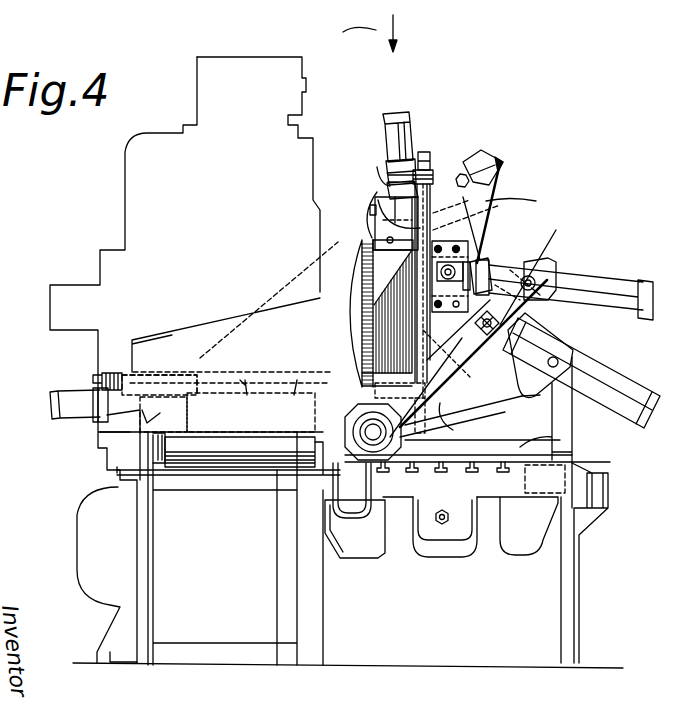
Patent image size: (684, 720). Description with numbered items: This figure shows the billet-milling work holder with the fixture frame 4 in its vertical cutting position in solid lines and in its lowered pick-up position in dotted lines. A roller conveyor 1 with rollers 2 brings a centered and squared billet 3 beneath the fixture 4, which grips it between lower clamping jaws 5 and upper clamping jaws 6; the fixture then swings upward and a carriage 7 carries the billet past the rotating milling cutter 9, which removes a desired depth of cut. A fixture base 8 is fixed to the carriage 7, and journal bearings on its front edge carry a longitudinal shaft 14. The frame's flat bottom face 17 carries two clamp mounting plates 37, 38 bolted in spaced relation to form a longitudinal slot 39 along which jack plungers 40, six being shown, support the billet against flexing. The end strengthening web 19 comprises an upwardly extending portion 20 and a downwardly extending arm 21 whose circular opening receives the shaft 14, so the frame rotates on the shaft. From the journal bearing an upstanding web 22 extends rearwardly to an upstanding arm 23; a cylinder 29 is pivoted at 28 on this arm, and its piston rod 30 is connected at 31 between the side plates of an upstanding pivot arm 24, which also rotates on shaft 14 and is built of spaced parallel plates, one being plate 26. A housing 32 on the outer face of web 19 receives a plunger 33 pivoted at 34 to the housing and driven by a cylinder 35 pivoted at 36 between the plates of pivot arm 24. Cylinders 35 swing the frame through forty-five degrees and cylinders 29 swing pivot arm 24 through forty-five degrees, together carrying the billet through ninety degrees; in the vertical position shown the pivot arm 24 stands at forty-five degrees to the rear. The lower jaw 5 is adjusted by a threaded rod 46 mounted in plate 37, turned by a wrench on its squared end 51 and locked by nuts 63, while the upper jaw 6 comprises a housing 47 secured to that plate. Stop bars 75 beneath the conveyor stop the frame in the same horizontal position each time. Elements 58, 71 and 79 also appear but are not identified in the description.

The roller conveyor 1 is at (223, 488).
The rollers 2 is at (182, 488).
The billet 3 is at (365, 348).
The work holder fixture 4 is at (518, 198).
The lower clamping jaws 5 is at (330, 446).
The upper clamping jaws 6 is at (256, 211).
The carriage 7 is at (462, 497).
The fixture base 8 is at (572, 442).
The milling cutter 9 is at (428, 300).
The longitudinal shaft 14 is at (385, 455).
The flat bottom face 17 is at (172, 340).
The end strengthening web 19 is at (244, 341).
The upwardly extending portion 20 is at (330, 248).
The downwardly extending arm 21 is at (461, 416).
The upstanding web 22 is at (510, 431).
The upstanding arm 23 is at (598, 367).
The pivot arm 24 is at (550, 268).
The parallel plate 26 is at (457, 355).
The pivotal mounting 28 is at (560, 358).
The cylinder 29 is at (625, 393).
The piston rod 30 is at (505, 330).
The pivotal connection 31 is at (388, 205).
The housing 32 is at (470, 252).
The plunger 33 is at (484, 270).
The pivotal connection 34 is at (500, 252).
The cylinder 35 is at (597, 283).
The pivotal connection 36 is at (536, 271).
The upper clamp mounting plate 37 is at (195, 350).
The lower clamp mounting plate 38 is at (362, 364).
The slot 39 is at (362, 292).
The jack plungers 40 is at (428, 338).
The threaded rod 46 is at (488, 203).
The housing 47 is at (292, 262).
The squared end 51 is at (426, 152).
The nut 58 is at (441, 177).
The nuts 63 is at (432, 168).
The cylinder 71 is at (62, 396).
The stop bars 75 is at (137, 498).
The housing 79 is at (390, 196).